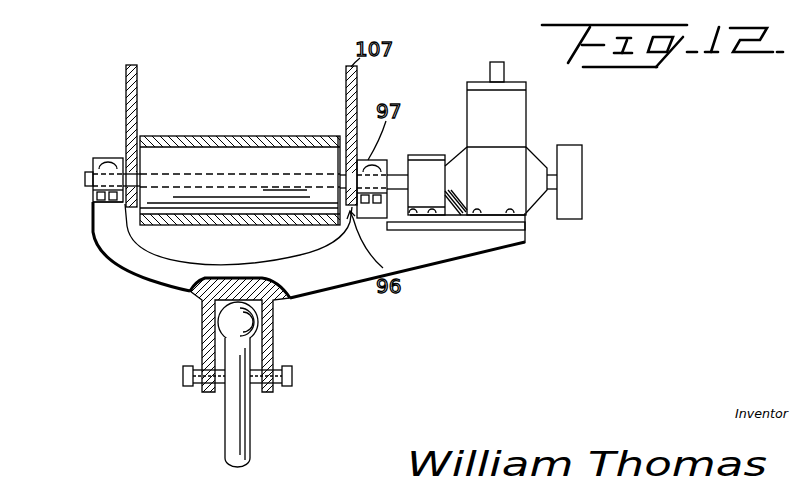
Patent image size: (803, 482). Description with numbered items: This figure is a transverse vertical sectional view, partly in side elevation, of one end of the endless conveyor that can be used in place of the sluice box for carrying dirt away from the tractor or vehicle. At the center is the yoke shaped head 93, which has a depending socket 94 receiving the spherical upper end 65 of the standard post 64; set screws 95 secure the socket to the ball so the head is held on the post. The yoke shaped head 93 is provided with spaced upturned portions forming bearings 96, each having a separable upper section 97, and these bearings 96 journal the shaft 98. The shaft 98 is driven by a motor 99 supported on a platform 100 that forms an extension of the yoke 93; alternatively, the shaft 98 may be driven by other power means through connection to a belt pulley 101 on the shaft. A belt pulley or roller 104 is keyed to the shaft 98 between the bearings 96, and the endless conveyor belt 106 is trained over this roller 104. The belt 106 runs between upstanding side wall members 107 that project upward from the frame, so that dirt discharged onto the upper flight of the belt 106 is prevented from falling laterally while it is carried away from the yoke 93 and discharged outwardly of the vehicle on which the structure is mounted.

The standard post 64 is at (230, 428).
The spherical upper end 65 is at (233, 324).
The yoke shaped head 93 is at (132, 276).
The depending socket 94 is at (258, 338).
The set screws 95 is at (287, 387).
The bearings 96 is at (92, 189).
The separable upper section 97 is at (100, 160).
The shaft 98 is at (91, 175).
The motor 99 is at (532, 160).
The platform 100 is at (447, 228).
The belt pulley 101 is at (582, 200).
The belt pulley or roller 104 is at (290, 162).
The endless conveyor belt 106 is at (188, 136).
The upstanding side wall members 107 is at (126, 77).